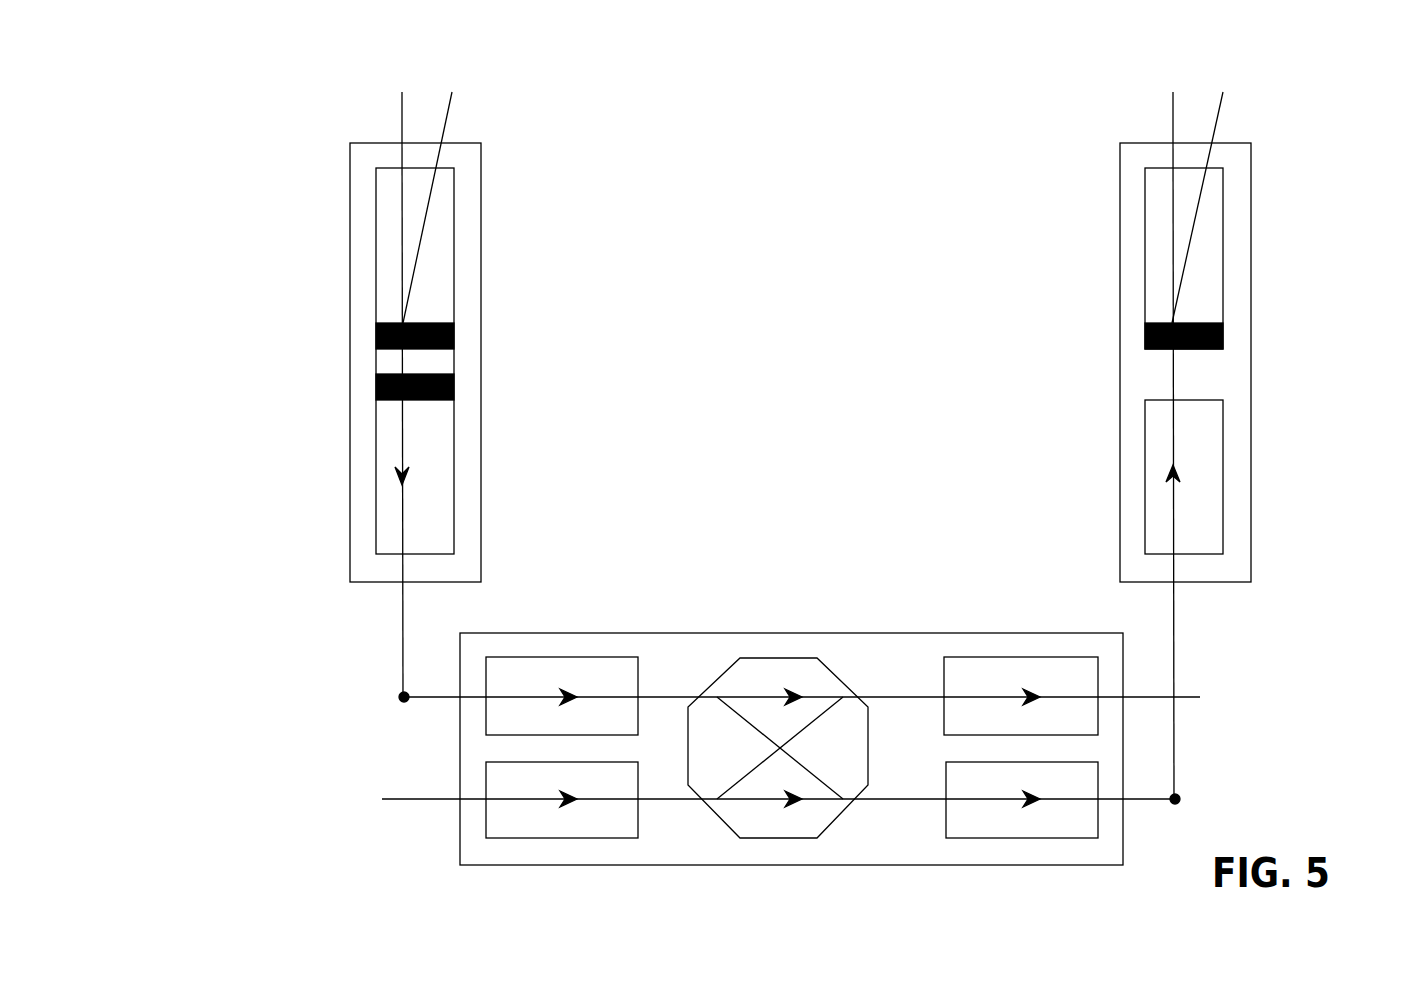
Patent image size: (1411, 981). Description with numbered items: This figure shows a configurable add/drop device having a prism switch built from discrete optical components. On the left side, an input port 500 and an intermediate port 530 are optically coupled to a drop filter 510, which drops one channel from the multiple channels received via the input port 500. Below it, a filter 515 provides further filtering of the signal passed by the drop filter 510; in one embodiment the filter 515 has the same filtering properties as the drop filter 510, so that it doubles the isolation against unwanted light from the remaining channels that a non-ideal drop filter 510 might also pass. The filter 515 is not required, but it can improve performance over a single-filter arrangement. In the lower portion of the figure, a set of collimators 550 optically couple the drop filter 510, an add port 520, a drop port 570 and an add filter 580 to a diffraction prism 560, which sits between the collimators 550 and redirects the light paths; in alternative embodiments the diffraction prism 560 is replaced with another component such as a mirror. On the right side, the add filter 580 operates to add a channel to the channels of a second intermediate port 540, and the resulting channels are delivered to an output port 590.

The input port 500 is at (349, 103).
The drop filter 510 is at (377, 349).
The filter 515 is at (377, 400).
The add port 520 is at (386, 796).
The intermediate port 530 is at (489, 193).
The intermediate port 540 is at (1108, 103).
The collimators 550 is at (1146, 503).
The diffraction prism 560 is at (767, 838).
The drop port 570 is at (1205, 695).
The add filter 580 is at (1197, 349).
The output port 590 is at (1247, 193).